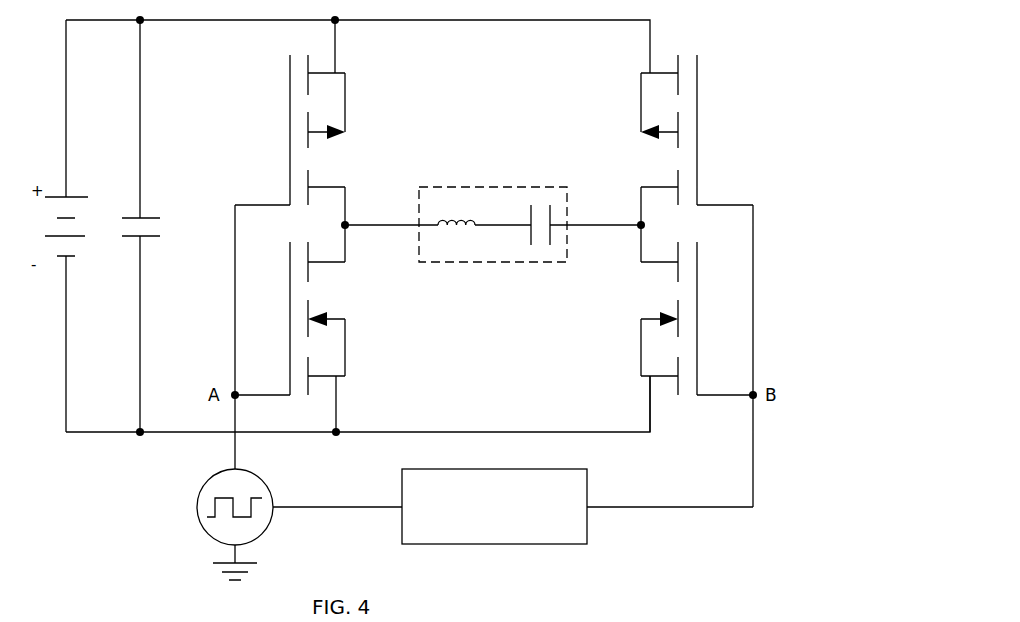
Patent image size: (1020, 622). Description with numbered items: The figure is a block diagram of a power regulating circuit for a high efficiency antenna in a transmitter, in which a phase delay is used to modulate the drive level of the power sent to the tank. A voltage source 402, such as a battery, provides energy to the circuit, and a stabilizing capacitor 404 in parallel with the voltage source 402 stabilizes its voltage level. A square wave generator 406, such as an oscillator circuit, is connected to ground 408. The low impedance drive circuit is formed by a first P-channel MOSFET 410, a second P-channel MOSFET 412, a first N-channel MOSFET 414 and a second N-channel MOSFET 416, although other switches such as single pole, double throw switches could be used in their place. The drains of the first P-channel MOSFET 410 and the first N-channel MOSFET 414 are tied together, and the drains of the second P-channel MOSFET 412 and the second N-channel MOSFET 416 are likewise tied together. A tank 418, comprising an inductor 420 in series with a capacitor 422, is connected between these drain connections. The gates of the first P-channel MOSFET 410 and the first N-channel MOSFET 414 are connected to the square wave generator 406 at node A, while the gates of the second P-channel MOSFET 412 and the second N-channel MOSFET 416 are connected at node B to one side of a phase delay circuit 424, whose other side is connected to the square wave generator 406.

The voltage source 402 is at (85, 197).
The stabilizing capacitor 404 is at (160, 218).
The square wave generator 406 is at (198, 507).
The ground 408 is at (230, 563).
The first P-channel MOSFET 410 is at (370, 148).
The second P-channel MOSFET 412 is at (618, 148).
The first N-channel MOSFET 414 is at (371, 327).
The second N-channel MOSFET 416 is at (617, 327).
The tank 418 is at (473, 187).
The inductor 420 is at (443, 220).
The capacitor 422 is at (555, 218).
The phase delay circuit 424 is at (587, 491).